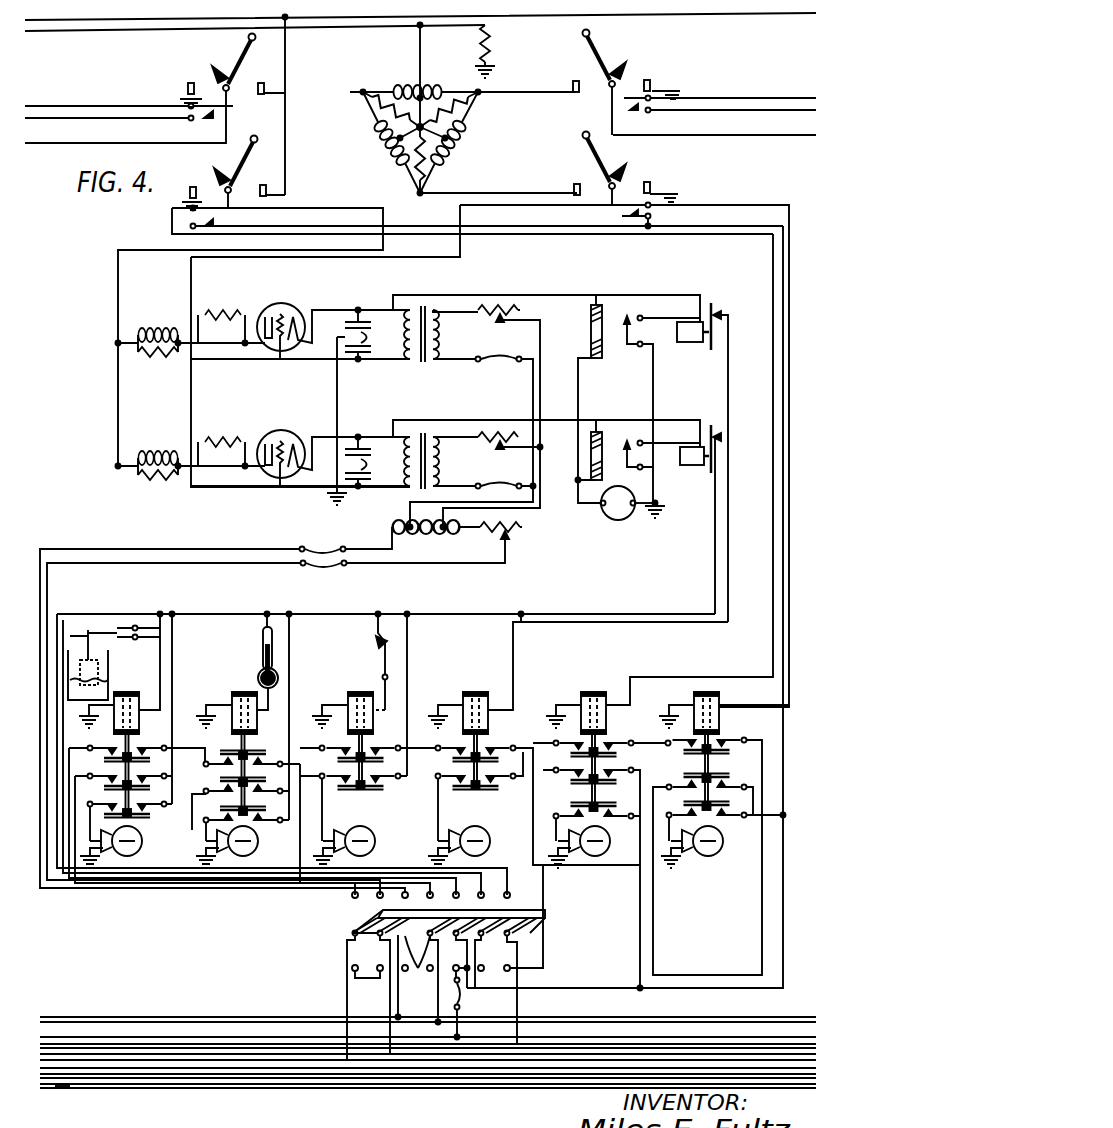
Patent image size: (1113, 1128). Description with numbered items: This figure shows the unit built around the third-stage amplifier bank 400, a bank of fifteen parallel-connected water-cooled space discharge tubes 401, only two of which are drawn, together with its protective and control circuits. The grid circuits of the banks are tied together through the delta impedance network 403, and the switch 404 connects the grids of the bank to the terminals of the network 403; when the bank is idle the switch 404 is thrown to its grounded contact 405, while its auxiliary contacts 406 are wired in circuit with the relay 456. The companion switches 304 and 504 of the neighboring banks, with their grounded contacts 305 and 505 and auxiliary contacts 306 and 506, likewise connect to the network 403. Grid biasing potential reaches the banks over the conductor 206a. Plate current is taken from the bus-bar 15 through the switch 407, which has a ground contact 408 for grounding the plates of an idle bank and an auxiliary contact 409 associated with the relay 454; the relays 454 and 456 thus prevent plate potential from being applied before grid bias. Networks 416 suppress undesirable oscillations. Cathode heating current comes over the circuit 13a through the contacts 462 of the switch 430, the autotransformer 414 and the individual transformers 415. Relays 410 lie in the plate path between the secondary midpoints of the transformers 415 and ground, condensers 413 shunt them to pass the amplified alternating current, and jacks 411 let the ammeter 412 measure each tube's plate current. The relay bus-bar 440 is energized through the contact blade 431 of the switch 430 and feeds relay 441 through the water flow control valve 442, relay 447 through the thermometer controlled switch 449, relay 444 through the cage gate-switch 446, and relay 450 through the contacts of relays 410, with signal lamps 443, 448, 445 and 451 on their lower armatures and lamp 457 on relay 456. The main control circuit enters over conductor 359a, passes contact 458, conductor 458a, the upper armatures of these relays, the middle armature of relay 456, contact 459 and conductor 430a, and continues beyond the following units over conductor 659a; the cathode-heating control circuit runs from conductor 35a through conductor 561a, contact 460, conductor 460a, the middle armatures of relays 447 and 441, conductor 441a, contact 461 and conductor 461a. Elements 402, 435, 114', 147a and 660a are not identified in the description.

The bus-bar 15 is at (44, 22).
The conductor 206a is at (100, 34).
The switch 304 is at (234, 57).
The grounded contact 305 is at (188, 87).
The auxiliary contacts 306 is at (233, 107).
The switch 407 is at (241, 163).
The ground contact 408 is at (188, 193).
The auxiliary contact 409 is at (450, 334).
The grounding resistor 402 is at (490, 41).
The delta impedance network 403 is at (398, 90).
The switch 504 is at (601, 51).
The grounded contact 505 is at (651, 84).
The auxiliary contacts 506 is at (628, 101).
The switch 404 is at (622, 158).
The grounded contact 405 is at (652, 184).
The auxiliary contacts 406 is at (622, 212).
The bank 400 is at (325, 346).
The tubes 401 is at (283, 303).
The networks 416 is at (138, 333).
The condensers 413 is at (366, 353).
The individual transformers 415 is at (423, 305).
The autotransformer 414 is at (392, 527).
The jacks 411 is at (596, 304).
The relays 410 is at (690, 343).
The ammeter 412 is at (618, 521).
The bus-bar 440 is at (325, 615).
The water flow control valve 442 is at (105, 655).
The relay 441 is at (135, 689).
The signal lamp 443 is at (142, 841).
The thermometer controlled switch 449 is at (261, 650).
The relay 447 is at (258, 690).
The signal lamp 448 is at (258, 841).
The cage gate-switch 446 is at (383, 653).
The relay 444 is at (357, 692).
The signal lamp 445 is at (375, 841).
The relay 450 is at (469, 692).
The signal lamp 451 is at (490, 841).
The relay 454 is at (592, 690).
The motor 435 is at (597, 856).
The relay 456 is at (703, 690).
The signal lamp 457 is at (711, 856).
The conductor 458a is at (68, 882).
The conductor 441a is at (134, 881).
The conductor 460a is at (306, 872).
The switch 430 is at (545, 914).
The contact 461 is at (346, 942).
The contact 460 is at (378, 945).
The contact 459 is at (517, 942).
The contact 458 is at (517, 968).
The contacts 462 is at (418, 973).
The contact blade 431 is at (462, 995).
The circuit 13a is at (52, 1026).
The conductor 430a is at (548, 1042).
The conductor 461a is at (150, 1058).
The conductor 114' is at (66, 1098).
The conductor 147a is at (115, 1079).
The conductor 359a is at (168, 1069).
The conductor 35a is at (228, 1061).
The conductor 660a is at (280, 1055).
The conductor 561a is at (398, 1061).
The conductor 659a is at (437, 1055).